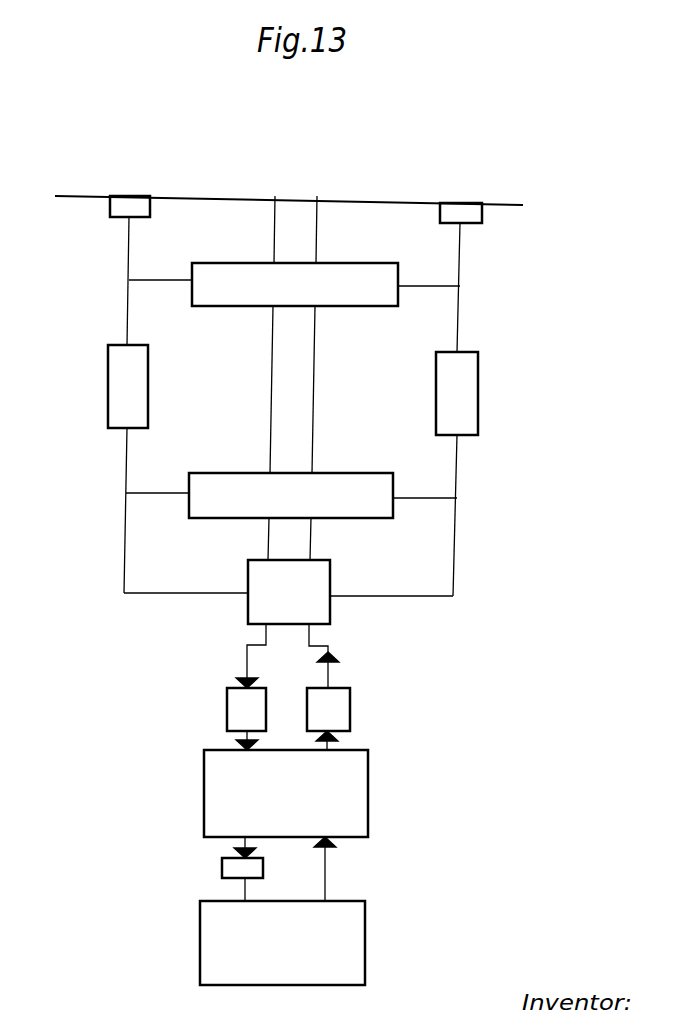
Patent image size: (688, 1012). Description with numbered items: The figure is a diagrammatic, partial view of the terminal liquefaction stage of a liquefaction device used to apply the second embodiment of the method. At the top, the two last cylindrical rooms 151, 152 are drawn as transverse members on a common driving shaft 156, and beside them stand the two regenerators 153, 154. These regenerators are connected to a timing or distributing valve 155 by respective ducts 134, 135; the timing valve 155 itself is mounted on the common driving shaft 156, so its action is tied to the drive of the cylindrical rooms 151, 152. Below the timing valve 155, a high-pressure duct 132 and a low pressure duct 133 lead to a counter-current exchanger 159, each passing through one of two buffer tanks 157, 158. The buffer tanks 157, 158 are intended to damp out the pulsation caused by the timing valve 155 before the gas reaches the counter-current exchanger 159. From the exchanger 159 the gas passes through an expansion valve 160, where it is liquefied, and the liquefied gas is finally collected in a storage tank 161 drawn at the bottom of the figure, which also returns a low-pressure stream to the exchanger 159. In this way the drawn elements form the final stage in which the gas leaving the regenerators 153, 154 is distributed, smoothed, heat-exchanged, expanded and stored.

The common driving shaft 156 is at (315, 210).
The cylindrical room 151 is at (215, 268).
The cylindrical room 152 is at (240, 483).
The regenerator 153 is at (113, 392).
The regenerator 154 is at (463, 383).
The timing or distributing valve 155 is at (263, 613).
The duct 134 is at (187, 592).
The duct 135 is at (365, 595).
The high-pressure duct 132 is at (245, 675).
The low pressure duct 133 is at (335, 680).
The buffer tank 157 is at (238, 722).
The buffer tank 158 is at (335, 725).
The counter-current exchanger 159 is at (350, 803).
The expansion valve 160 is at (240, 870).
The storage tank 161 is at (355, 957).